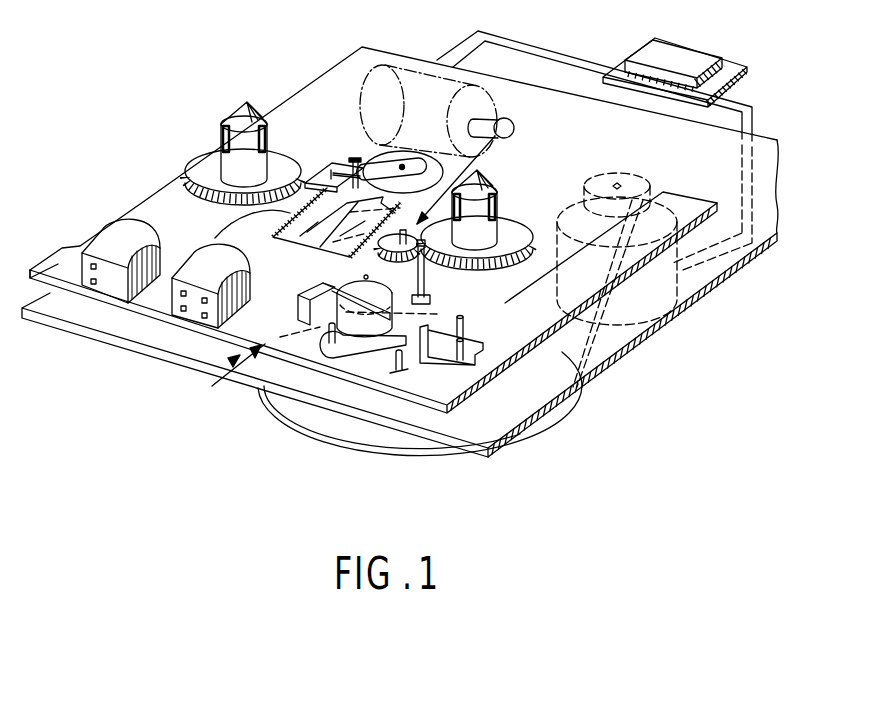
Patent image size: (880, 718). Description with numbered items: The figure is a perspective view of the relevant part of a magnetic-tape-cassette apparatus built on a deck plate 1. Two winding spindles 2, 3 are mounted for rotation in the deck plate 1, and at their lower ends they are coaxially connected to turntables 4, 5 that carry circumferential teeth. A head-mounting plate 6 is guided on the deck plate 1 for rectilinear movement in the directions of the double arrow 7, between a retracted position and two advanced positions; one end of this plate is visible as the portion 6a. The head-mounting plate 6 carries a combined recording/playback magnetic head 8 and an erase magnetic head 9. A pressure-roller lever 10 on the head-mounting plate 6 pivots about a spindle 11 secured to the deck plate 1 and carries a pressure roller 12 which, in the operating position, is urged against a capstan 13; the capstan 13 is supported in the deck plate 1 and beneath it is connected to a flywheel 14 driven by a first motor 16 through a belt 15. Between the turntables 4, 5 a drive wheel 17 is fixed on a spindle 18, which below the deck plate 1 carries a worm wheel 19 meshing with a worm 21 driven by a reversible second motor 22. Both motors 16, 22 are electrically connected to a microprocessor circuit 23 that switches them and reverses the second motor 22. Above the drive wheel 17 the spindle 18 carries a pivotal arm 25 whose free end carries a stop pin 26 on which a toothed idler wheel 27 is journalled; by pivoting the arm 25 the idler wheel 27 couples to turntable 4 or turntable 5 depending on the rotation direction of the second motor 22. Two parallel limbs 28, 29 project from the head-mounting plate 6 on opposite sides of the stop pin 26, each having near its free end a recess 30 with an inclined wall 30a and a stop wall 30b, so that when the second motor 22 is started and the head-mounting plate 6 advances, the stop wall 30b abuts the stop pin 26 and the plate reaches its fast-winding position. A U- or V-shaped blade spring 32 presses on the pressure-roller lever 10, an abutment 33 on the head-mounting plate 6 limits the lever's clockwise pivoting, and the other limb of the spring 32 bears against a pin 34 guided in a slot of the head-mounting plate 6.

The deck plate 1 is at (632, 334).
The winding spindle 2 is at (237, 118).
The winding spindle 3 is at (493, 183).
The turntable 4 is at (203, 168).
The turntable 5 is at (517, 230).
The head-mounting plate 6 is at (208, 333).
The slide bar end portion 6a is at (50, 300).
The double arrow 7 is at (230, 372).
The magnetic head 8 is at (195, 267).
The magnetic head 9 is at (123, 237).
The pressure-roller lever 10 is at (442, 330).
The spindle 11 is at (466, 336).
The pressure roller 12 is at (378, 347).
The capstan 13 is at (460, 275).
The flywheel 14 is at (302, 413).
The belt 15 is at (600, 347).
The first motor 16 is at (693, 288).
The drive wheel 17 is at (381, 157).
The spindle 18 is at (358, 265).
The worm wheel 19 is at (412, 233).
The worm 21 is at (515, 128).
The second motor 22 is at (413, 80).
The microprocessor circuit 23 is at (692, 57).
The pivotal arm 25 is at (413, 160).
The pin 26 is at (353, 145).
The idler wheel 27 is at (315, 220).
The limb 28 is at (245, 220).
The limb 29 is at (367, 225).
The recess 30 is at (333, 162).
The wall 30a is at (338, 150).
The stop wall 30b is at (310, 172).
The blade spring 32 is at (350, 358).
The abutment 33 is at (298, 300).
The pin 34 is at (399, 372).